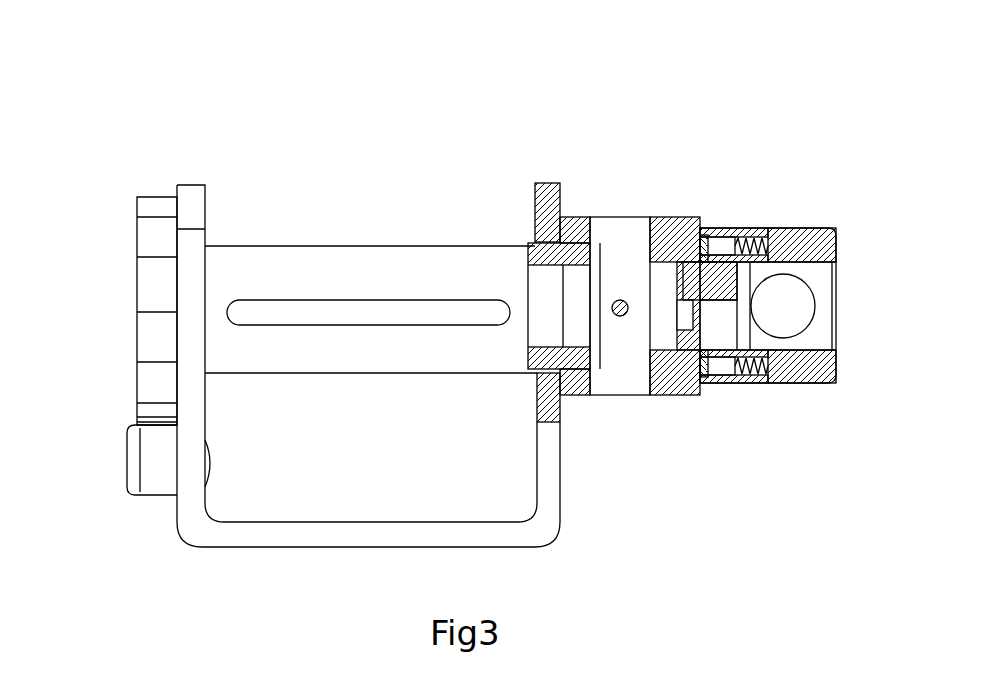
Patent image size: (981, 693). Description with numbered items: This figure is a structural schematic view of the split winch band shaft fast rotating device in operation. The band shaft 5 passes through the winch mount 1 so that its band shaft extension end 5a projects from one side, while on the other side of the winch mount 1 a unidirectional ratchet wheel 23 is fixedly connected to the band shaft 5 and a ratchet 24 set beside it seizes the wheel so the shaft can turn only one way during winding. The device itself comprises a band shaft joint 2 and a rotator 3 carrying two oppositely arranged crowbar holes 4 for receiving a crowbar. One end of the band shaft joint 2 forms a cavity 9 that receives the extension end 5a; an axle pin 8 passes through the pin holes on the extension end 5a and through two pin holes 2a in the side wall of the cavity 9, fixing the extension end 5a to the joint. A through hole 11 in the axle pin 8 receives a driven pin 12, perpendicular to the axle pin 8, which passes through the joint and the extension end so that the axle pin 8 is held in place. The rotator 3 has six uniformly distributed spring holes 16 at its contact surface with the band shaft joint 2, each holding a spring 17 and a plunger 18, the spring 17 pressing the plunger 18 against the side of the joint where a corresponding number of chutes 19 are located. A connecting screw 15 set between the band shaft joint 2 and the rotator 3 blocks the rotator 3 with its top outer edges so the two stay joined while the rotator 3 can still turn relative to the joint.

The winch mount 1 is at (193, 200).
The band shaft joint 2 is at (645, 217).
The pin holes 2a is at (598, 235).
The rotator 3 is at (827, 228).
The crowbar holes 4 is at (807, 318).
The band shaft 5 is at (348, 230).
The band shaft extension end 5a is at (540, 232).
The axle pin 8 is at (585, 217).
The cavity 9 is at (722, 292).
The through hole 11 is at (615, 318).
The driven pin 12 is at (625, 318).
The connecting screw 15 is at (735, 230).
The spring holes 16 is at (770, 230).
The spring 17 is at (755, 230).
The plunger 18 is at (698, 225).
The chutes 19 is at (668, 217).
The unidirectional ratchet wheel 23 is at (140, 348).
The ratchet 24 is at (148, 487).